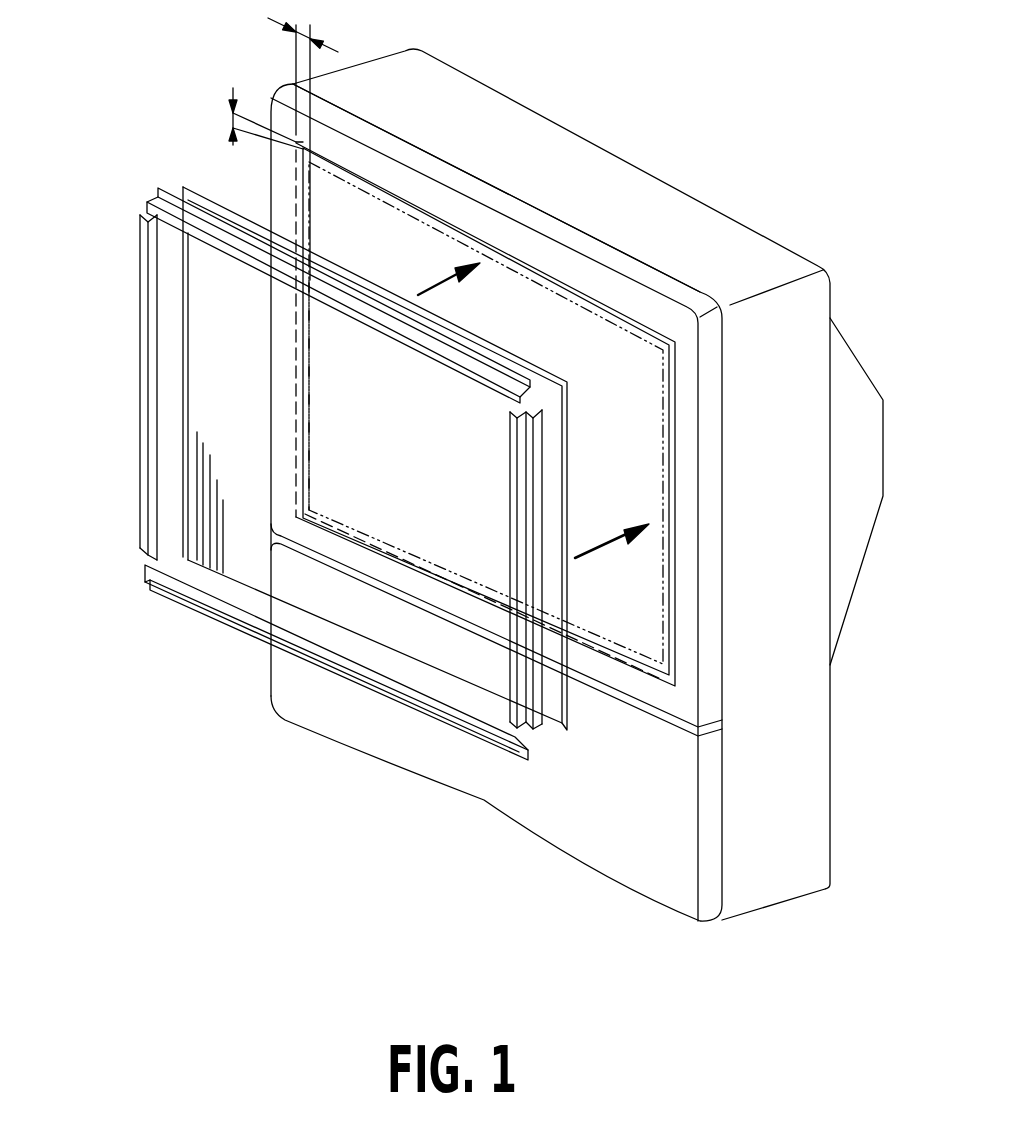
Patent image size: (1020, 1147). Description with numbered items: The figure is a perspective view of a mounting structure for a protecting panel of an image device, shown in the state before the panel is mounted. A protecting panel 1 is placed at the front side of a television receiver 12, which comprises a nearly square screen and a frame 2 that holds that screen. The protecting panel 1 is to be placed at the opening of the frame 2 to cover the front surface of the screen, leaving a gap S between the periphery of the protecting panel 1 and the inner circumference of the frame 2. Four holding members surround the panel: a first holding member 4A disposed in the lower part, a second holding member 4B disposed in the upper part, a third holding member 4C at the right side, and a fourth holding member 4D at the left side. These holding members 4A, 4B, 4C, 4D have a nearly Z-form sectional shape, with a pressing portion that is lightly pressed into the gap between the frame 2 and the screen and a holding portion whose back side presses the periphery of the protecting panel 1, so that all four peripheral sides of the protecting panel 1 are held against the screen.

The protecting panel 1 is at (333, 222).
The frame 2 is at (605, 258).
The television receiver 12 is at (503, 122).
The first holding member 4A is at (243, 610).
The second holding member 4B is at (452, 342).
The third holding member 4C is at (512, 713).
The fourth holding member 4D is at (157, 514).